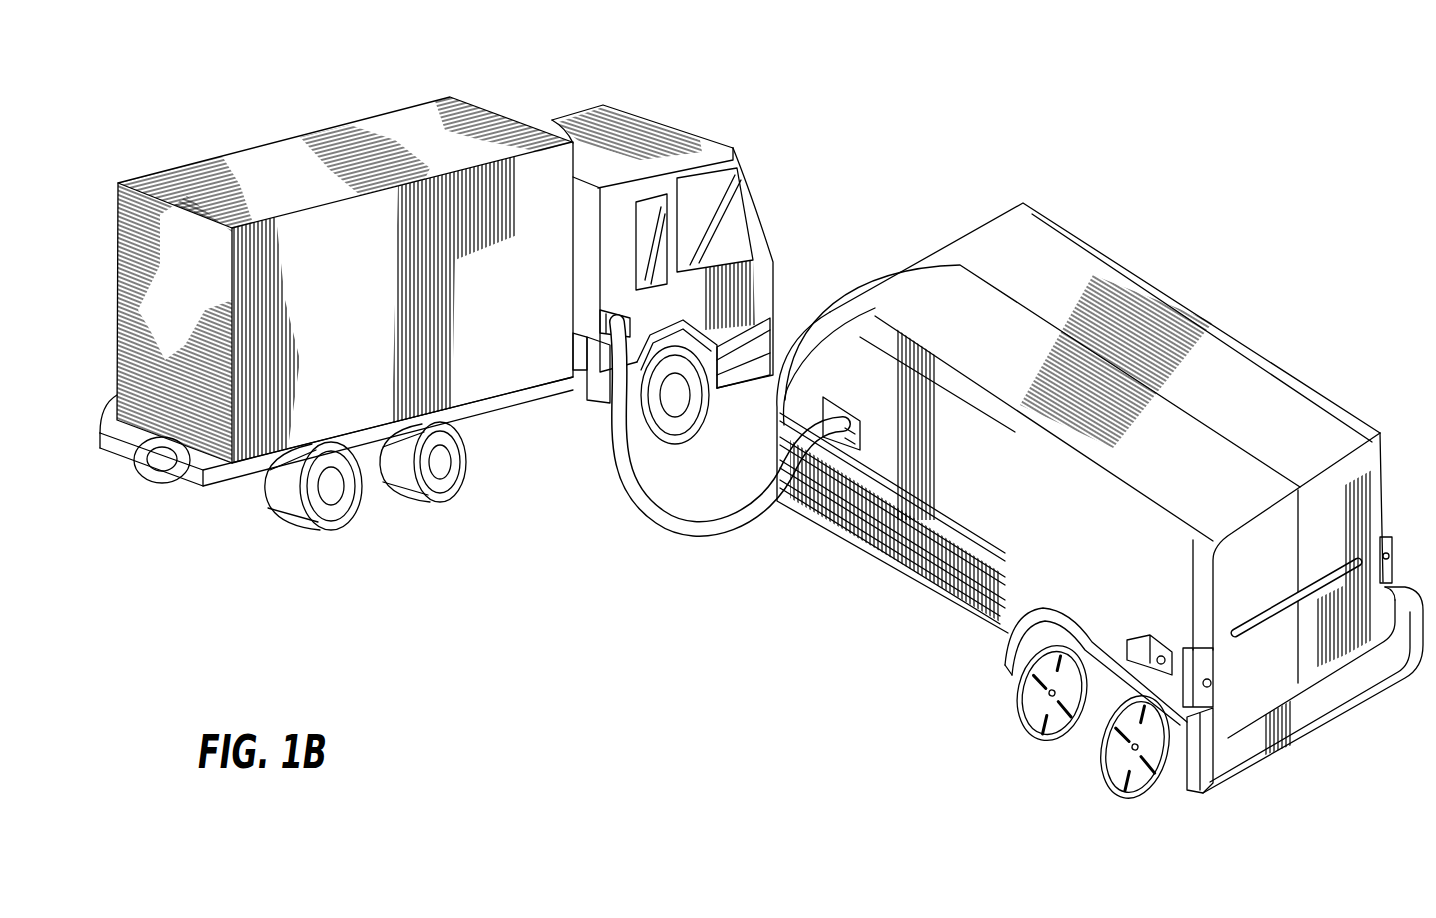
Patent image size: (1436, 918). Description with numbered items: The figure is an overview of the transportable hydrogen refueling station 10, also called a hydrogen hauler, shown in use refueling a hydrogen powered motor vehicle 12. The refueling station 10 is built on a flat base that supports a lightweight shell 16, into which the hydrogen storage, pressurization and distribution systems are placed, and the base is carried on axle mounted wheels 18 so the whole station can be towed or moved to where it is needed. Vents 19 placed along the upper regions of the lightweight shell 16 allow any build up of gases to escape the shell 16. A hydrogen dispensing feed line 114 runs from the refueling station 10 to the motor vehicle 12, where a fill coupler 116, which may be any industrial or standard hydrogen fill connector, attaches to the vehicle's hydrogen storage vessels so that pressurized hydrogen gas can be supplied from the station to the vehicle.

The hydrogen refueling station 10 is at (1153, 224).
The hydrogen powered motor vehicle 12 is at (602, 125).
The lightweight shell 16 is at (1250, 330).
The axle mounted wheels 18 is at (1103, 748).
The vents 19 is at (950, 340).
The hydrogen dispensing feed line 114 is at (680, 512).
The fill coupler 116 is at (616, 320).